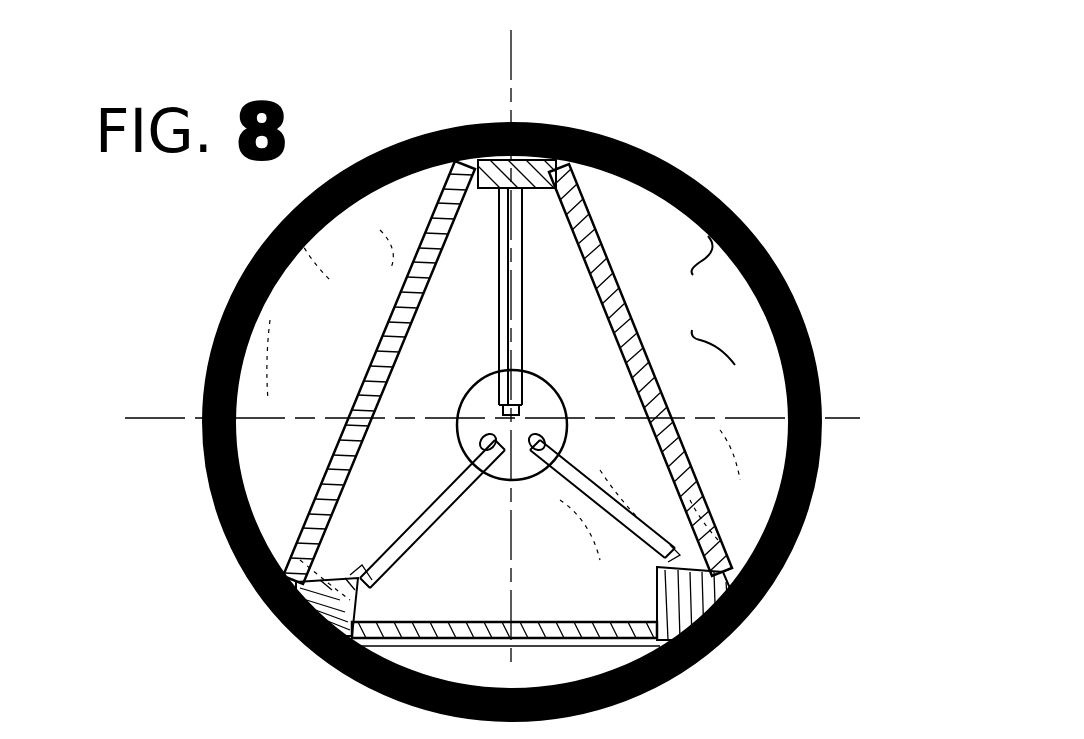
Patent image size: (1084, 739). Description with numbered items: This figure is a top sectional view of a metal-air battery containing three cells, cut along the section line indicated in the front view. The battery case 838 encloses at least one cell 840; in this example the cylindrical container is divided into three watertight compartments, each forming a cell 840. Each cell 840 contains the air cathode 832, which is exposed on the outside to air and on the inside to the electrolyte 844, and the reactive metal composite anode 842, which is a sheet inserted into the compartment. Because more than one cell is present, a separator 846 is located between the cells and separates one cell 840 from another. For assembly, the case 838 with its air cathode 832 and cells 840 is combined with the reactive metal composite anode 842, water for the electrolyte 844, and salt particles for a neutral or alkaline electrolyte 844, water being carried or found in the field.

The battery case 838 is at (142, 318).
The air cathode 832 is at (577, 128).
The cell 840 is at (730, 210).
The reactive metal composite anode 842 is at (663, 392).
The electrolyte 844 is at (735, 365).
The separator 846 is at (530, 268).